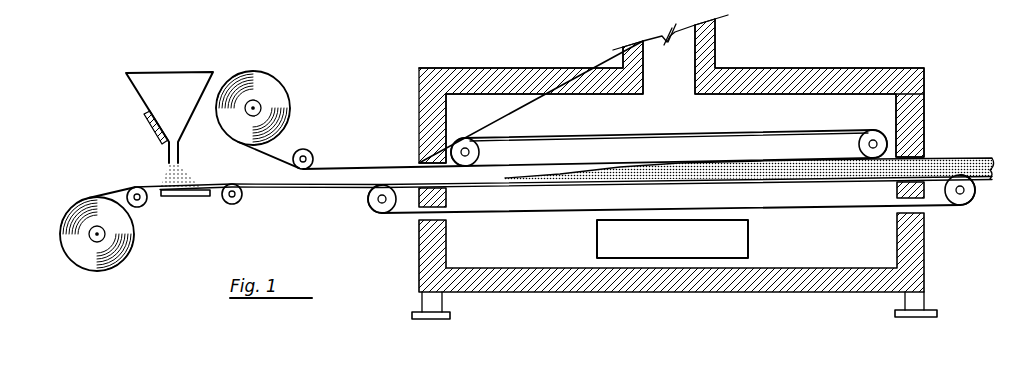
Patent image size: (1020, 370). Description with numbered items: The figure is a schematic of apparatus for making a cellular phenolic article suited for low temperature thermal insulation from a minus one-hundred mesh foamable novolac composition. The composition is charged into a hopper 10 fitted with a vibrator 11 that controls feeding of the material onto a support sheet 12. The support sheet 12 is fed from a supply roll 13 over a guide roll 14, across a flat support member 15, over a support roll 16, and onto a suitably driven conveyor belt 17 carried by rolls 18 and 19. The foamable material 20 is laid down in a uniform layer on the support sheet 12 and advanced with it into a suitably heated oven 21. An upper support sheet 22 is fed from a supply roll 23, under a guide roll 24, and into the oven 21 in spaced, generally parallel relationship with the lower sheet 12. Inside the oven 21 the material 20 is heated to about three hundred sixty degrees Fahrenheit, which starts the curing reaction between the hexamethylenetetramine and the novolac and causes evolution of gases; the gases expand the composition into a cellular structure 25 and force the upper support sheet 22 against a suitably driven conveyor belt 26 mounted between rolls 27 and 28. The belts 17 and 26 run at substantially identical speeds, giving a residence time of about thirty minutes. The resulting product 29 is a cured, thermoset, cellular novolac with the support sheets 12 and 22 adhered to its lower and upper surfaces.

The hopper 10 is at (135, 89).
The vibrator 11 is at (147, 130).
The support sheet 12 is at (278, 187).
The supply roll 13 is at (131, 250).
The guide roll 14 is at (140, 208).
The flat support member 15 is at (190, 199).
The support roll 16 is at (230, 205).
The conveyor belt 17 is at (955, 205).
The roll 18 is at (388, 212).
The roll 19 is at (947, 194).
The foamable material 20 is at (204, 186).
The oven 21 is at (412, 66).
The upper support sheet 22 is at (368, 166).
The supply roll 23 is at (282, 88).
The guide roll 24 is at (300, 149).
The cellular structure 25 is at (527, 165).
The conveyor belt 26 is at (886, 130).
The roll 27 is at (483, 139).
The roll 28 is at (856, 140).
The product 29 is at (990, 160).